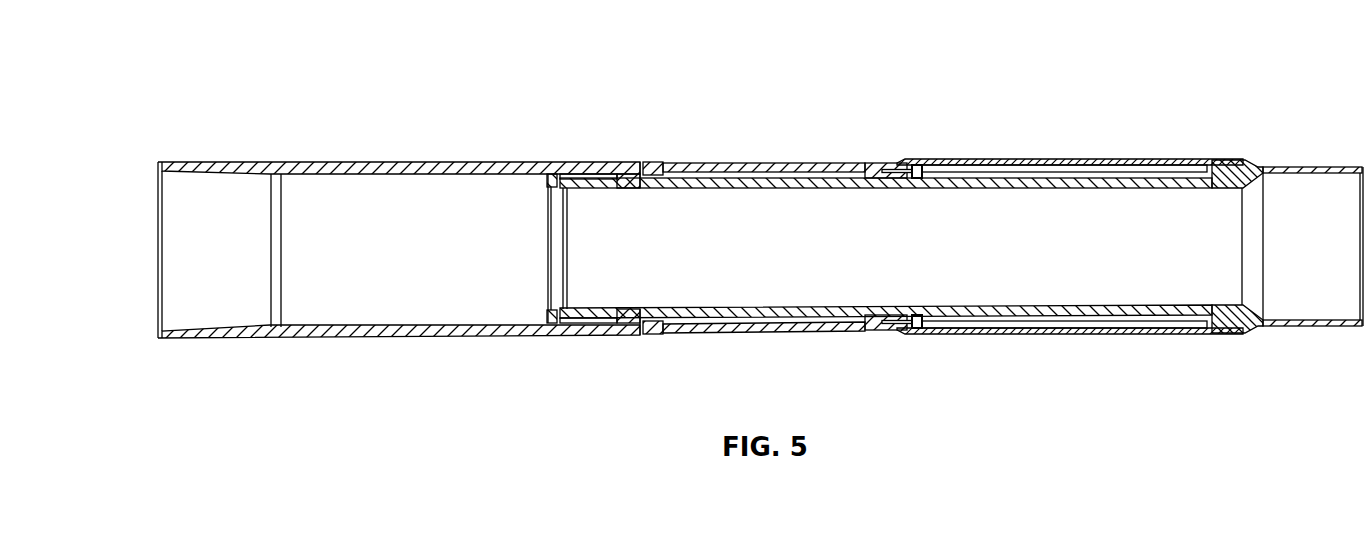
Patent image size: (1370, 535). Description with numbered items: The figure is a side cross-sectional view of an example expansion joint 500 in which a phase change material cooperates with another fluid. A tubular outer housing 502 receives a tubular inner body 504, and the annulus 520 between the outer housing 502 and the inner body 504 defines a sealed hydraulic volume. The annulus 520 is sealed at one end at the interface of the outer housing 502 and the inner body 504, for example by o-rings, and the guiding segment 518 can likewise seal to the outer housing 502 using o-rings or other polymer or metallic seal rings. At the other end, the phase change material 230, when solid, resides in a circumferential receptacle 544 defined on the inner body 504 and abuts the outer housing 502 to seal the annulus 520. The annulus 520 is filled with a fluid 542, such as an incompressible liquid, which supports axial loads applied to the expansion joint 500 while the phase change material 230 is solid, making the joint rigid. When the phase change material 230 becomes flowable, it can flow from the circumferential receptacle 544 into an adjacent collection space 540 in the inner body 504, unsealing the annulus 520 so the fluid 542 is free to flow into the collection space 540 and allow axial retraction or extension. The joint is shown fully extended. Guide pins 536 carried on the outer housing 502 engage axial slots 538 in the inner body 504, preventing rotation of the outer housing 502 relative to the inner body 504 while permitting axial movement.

The expansion joint 500 is at (250, 60).
The tubular outer housing 502 is at (490, 172).
The tubular inner body 504 is at (980, 330).
The guiding segment 518 is at (557, 178).
The annulus 520 is at (712, 172).
The fluid 542 is at (763, 182).
The circumferential receptacle 544 is at (868, 168).
The phase change material 230 is at (882, 170).
The guide pins 536 is at (923, 172).
The collection space 540 is at (1090, 165).
The axial slots 538 is at (1157, 177).